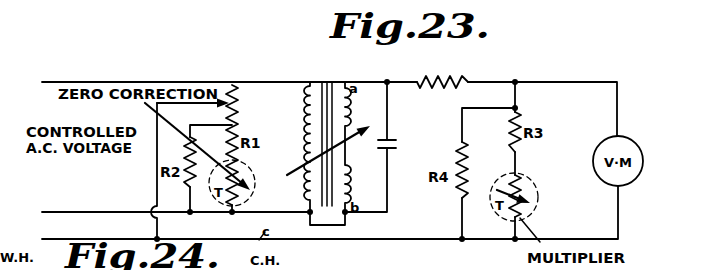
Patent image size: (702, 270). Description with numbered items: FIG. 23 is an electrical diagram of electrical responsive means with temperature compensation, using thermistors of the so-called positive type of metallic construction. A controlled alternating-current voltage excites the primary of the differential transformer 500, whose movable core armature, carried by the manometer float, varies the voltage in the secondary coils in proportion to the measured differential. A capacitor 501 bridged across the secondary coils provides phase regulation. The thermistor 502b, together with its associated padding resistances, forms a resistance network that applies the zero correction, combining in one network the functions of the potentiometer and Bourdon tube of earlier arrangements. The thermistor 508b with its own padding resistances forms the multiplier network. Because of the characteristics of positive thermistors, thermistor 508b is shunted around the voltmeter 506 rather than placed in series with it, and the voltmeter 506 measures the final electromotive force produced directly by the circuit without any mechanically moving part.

The differential transformer 500 is at (352, 78).
The capacitor 501 is at (385, 147).
The thermistor 502b is at (252, 202).
The voltmeter 506 is at (634, 141).
The thermistor 508b is at (544, 202).